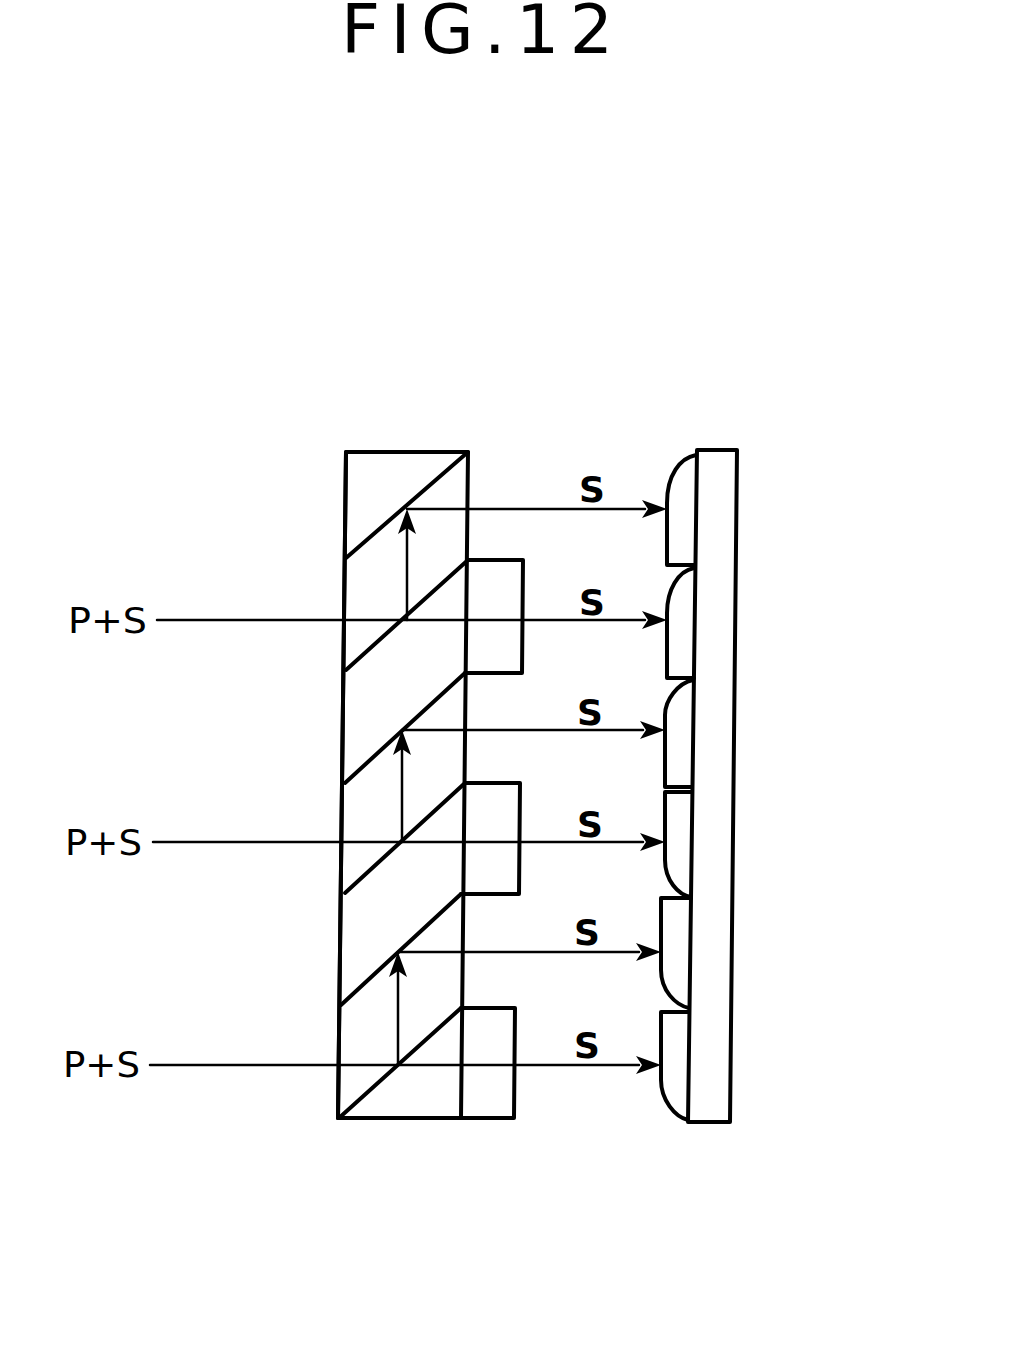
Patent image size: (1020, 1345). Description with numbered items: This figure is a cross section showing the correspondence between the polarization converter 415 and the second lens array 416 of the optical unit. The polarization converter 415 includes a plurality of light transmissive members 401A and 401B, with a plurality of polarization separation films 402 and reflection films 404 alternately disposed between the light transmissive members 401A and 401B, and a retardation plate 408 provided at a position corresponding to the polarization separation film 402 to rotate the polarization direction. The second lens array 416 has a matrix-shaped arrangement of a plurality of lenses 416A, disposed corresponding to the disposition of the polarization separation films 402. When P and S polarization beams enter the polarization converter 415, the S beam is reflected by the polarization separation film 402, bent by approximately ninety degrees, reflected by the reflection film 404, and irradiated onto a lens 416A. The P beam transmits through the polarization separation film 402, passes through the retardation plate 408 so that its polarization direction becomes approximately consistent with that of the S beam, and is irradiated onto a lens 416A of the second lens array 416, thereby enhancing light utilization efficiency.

The polarization converter 415 is at (377, 451).
The reflection film 404 is at (470, 478).
The polarization separation film 402 is at (380, 645).
The light transmissive member 401A is at (367, 1022).
The light transmissive member 401B is at (428, 1095).
The retardation plate 408 is at (497, 1100).
The second lens array 416 is at (727, 478).
The lens 416A is at (680, 484).